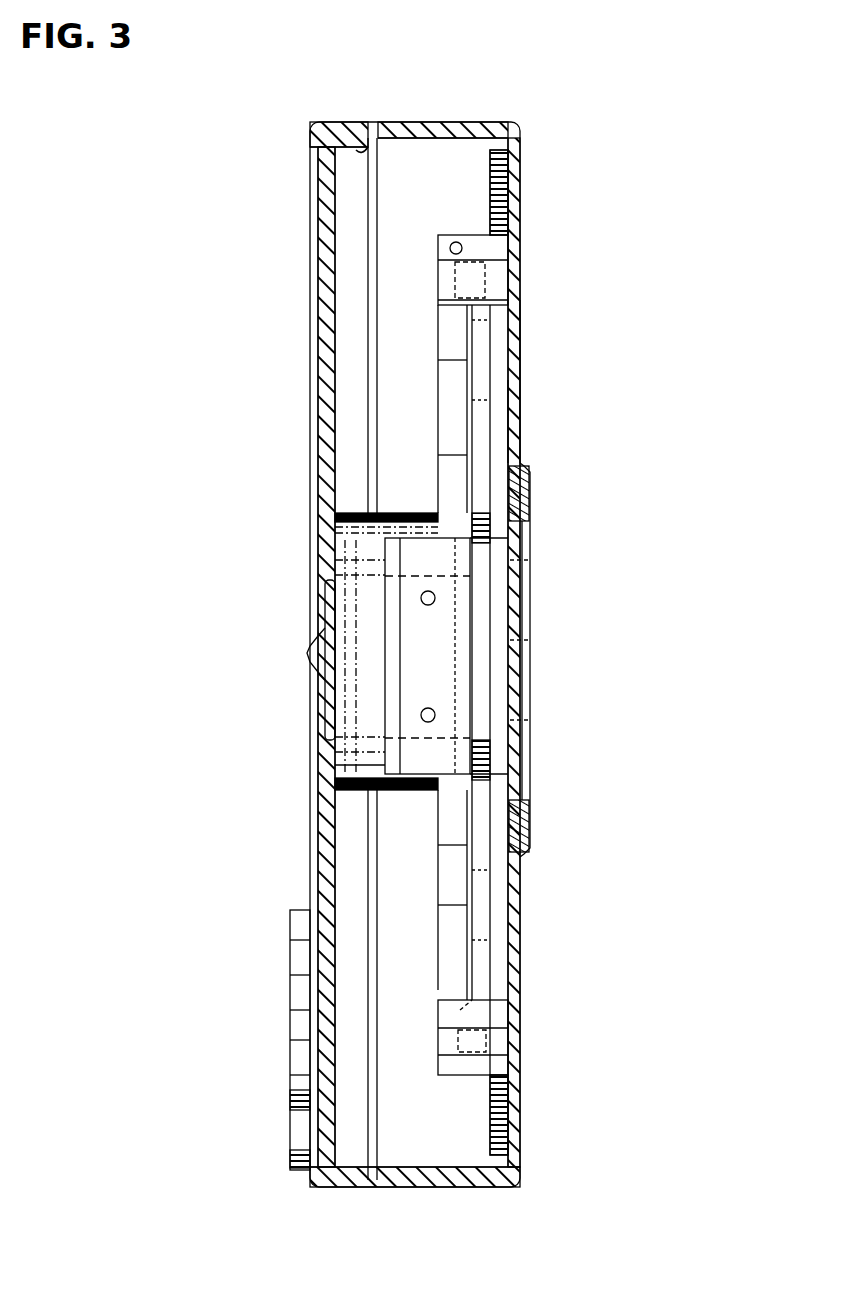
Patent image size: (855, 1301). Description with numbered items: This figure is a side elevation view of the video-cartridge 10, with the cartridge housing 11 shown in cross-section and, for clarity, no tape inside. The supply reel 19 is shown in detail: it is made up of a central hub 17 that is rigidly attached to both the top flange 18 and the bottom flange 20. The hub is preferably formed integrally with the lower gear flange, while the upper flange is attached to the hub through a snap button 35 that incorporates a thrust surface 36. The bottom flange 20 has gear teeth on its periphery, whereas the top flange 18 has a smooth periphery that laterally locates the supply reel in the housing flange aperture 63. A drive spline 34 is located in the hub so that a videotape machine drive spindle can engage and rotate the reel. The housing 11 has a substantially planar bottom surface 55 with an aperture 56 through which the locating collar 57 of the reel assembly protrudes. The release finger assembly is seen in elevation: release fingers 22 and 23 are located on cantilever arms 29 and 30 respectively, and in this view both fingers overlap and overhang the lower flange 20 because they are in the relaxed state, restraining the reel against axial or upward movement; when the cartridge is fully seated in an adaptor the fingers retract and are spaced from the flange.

The video-cartridge 10 is at (422, 98).
The cartridge housing 11 is at (476, 127).
The hub 17 is at (422, 514).
The top flange 18 is at (324, 198).
The supply reel 19 is at (350, 285).
The bottom flange 20 is at (492, 200).
The release finger 22 is at (496, 252).
The release finger 23 is at (494, 1000).
The cantilever arm 29 is at (452, 354).
The cantilever arm 30 is at (452, 874).
The drive spline 34 is at (432, 578).
The snap button 35 is at (328, 606).
The thrust surface 36 is at (308, 657).
The bottom surface 55 is at (520, 360).
The aperture 56 is at (520, 412).
The locating collar 57 is at (531, 480).
The flange aperture 63 is at (366, 160).